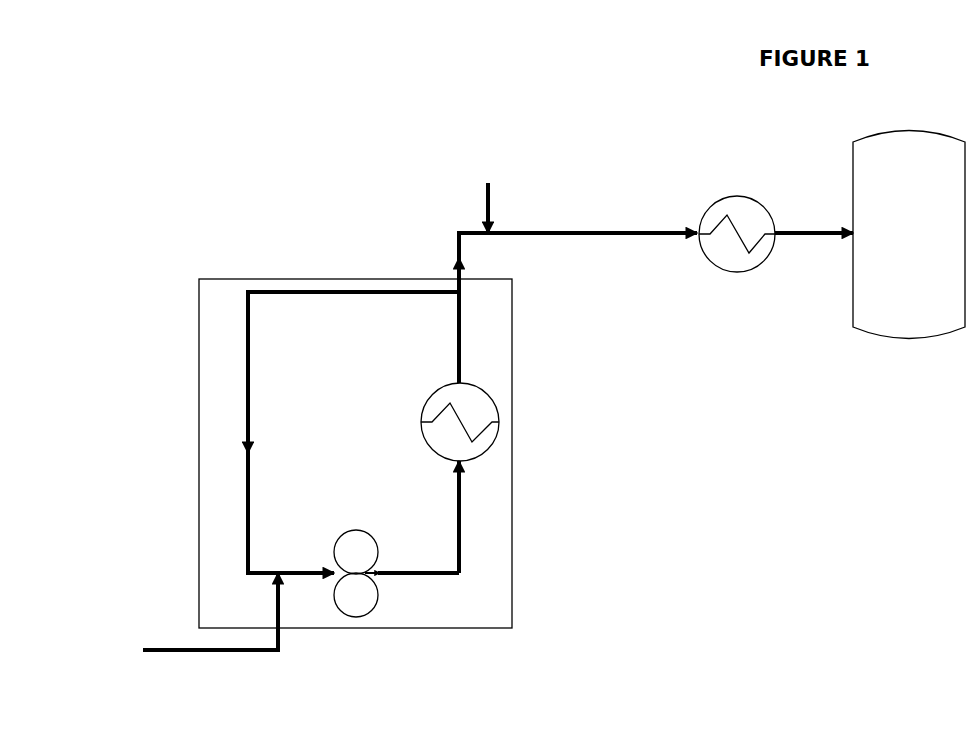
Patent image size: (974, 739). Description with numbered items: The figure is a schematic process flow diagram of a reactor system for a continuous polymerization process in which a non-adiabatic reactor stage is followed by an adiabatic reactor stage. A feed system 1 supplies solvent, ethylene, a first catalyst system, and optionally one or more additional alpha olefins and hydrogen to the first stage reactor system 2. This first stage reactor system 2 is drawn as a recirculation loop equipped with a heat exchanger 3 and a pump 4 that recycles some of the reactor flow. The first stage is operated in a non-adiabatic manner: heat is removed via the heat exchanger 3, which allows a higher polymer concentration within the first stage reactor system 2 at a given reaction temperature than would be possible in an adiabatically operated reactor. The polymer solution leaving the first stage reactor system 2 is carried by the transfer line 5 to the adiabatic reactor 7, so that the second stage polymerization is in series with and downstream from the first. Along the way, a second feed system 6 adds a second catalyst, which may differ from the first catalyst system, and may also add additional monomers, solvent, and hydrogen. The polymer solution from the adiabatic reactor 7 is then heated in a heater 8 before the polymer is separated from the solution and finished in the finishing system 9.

The feed system 1 is at (210, 636).
The first stage reactor system 2 is at (339, 453).
The heat exchanger 3 is at (444, 422).
The pump 4 is at (366, 573).
The transfer line 5 is at (444, 262).
The feed system 6 is at (486, 188).
The adiabatic reactor 7 is at (577, 254).
The heater 8 is at (776, 252).
The finishing system 9 is at (909, 235).